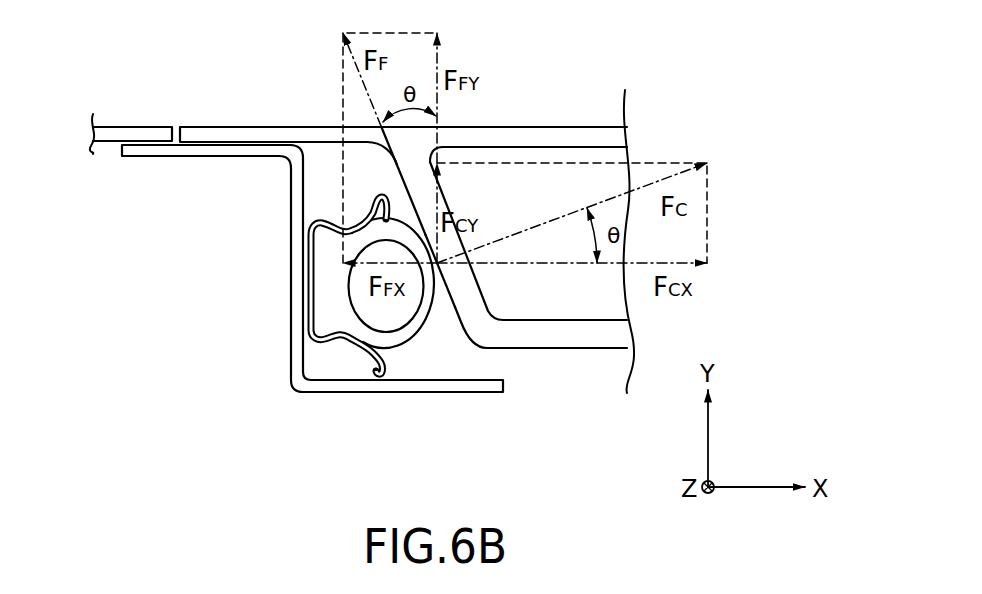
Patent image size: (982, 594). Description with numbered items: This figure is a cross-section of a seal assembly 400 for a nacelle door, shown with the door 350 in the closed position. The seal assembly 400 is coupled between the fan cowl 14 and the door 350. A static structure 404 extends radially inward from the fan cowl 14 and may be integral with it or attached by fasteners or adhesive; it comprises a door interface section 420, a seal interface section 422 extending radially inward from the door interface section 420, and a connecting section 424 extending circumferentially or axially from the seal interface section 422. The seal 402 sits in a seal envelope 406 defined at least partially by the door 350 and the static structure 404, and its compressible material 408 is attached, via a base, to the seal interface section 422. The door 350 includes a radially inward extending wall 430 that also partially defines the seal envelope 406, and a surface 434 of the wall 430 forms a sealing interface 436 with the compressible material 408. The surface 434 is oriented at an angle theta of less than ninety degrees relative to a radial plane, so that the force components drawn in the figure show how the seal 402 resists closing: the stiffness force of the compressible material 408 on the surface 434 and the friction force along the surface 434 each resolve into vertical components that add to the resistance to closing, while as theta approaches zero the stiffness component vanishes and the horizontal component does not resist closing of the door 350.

The fan cowl 14 is at (138, 127).
The door 350 is at (533, 138).
The seal assembly 400 is at (277, 244).
The seal 402 is at (412, 353).
The static structure 404 is at (177, 186).
The seal envelope 406 is at (348, 314).
The compressible material 408 is at (322, 308).
The door interface section 420 is at (194, 146).
The seal interface section 422 is at (294, 231).
The connecting section 424 is at (393, 393).
The wall 430 is at (462, 287).
The surface 434 is at (404, 182).
The sealing interface 436 is at (441, 299).